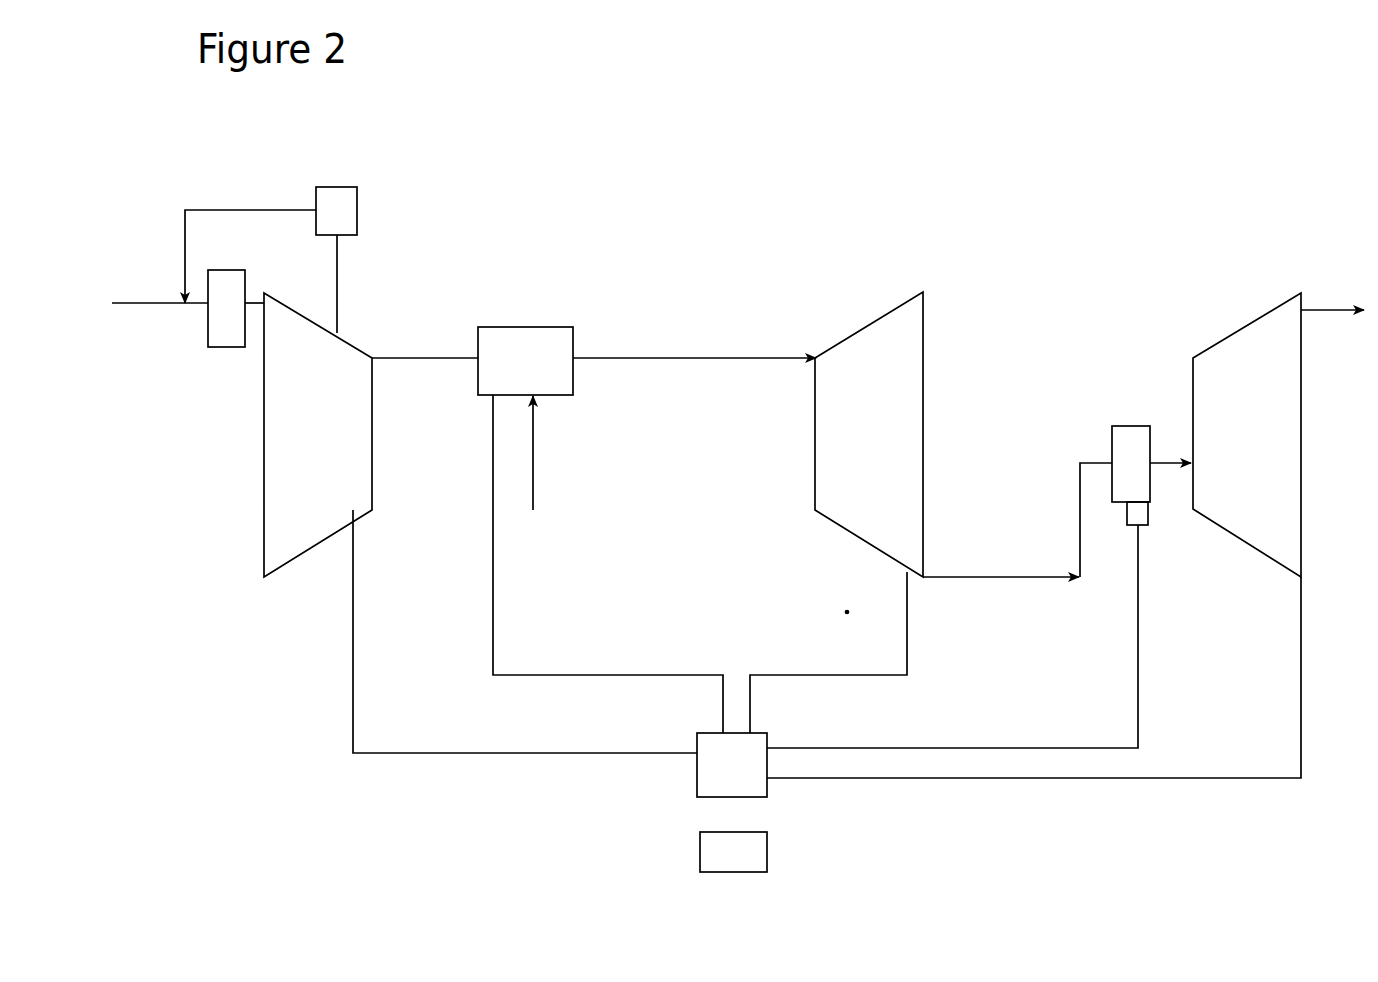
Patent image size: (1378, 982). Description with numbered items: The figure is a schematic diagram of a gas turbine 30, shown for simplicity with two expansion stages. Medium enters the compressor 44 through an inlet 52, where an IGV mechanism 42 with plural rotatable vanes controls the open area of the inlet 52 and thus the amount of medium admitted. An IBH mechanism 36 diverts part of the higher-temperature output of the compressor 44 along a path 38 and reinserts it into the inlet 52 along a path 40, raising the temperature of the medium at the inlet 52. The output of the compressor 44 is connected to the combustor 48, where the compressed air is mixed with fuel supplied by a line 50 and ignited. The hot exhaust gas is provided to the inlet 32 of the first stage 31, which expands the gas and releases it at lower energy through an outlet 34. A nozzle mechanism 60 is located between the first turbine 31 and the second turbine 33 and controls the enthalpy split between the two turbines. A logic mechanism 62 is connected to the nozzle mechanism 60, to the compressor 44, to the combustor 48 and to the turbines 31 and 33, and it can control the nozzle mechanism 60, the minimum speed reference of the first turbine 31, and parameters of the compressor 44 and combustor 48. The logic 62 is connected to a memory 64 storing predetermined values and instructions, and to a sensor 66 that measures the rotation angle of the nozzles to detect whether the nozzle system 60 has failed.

The gas turbine 30 is at (725, 146).
The first stage 31 is at (880, 518).
The inlet 32 is at (622, 358).
The second turbine 33 is at (1258, 518).
The outlet 34 is at (978, 577).
The IBH mechanism 36 is at (357, 202).
The path 38 is at (337, 272).
The path 40 is at (215, 210).
The IGV mechanism 42 is at (224, 333).
The compressor 44 is at (305, 520).
The combustor 48 is at (505, 327).
The line 50 is at (533, 495).
The inlet 52 is at (134, 303).
The nozzle mechanism 60 is at (1120, 426).
The logic mechanism 62 is at (767, 797).
The memory 64 is at (767, 850).
The sensor 66 is at (1149, 515).